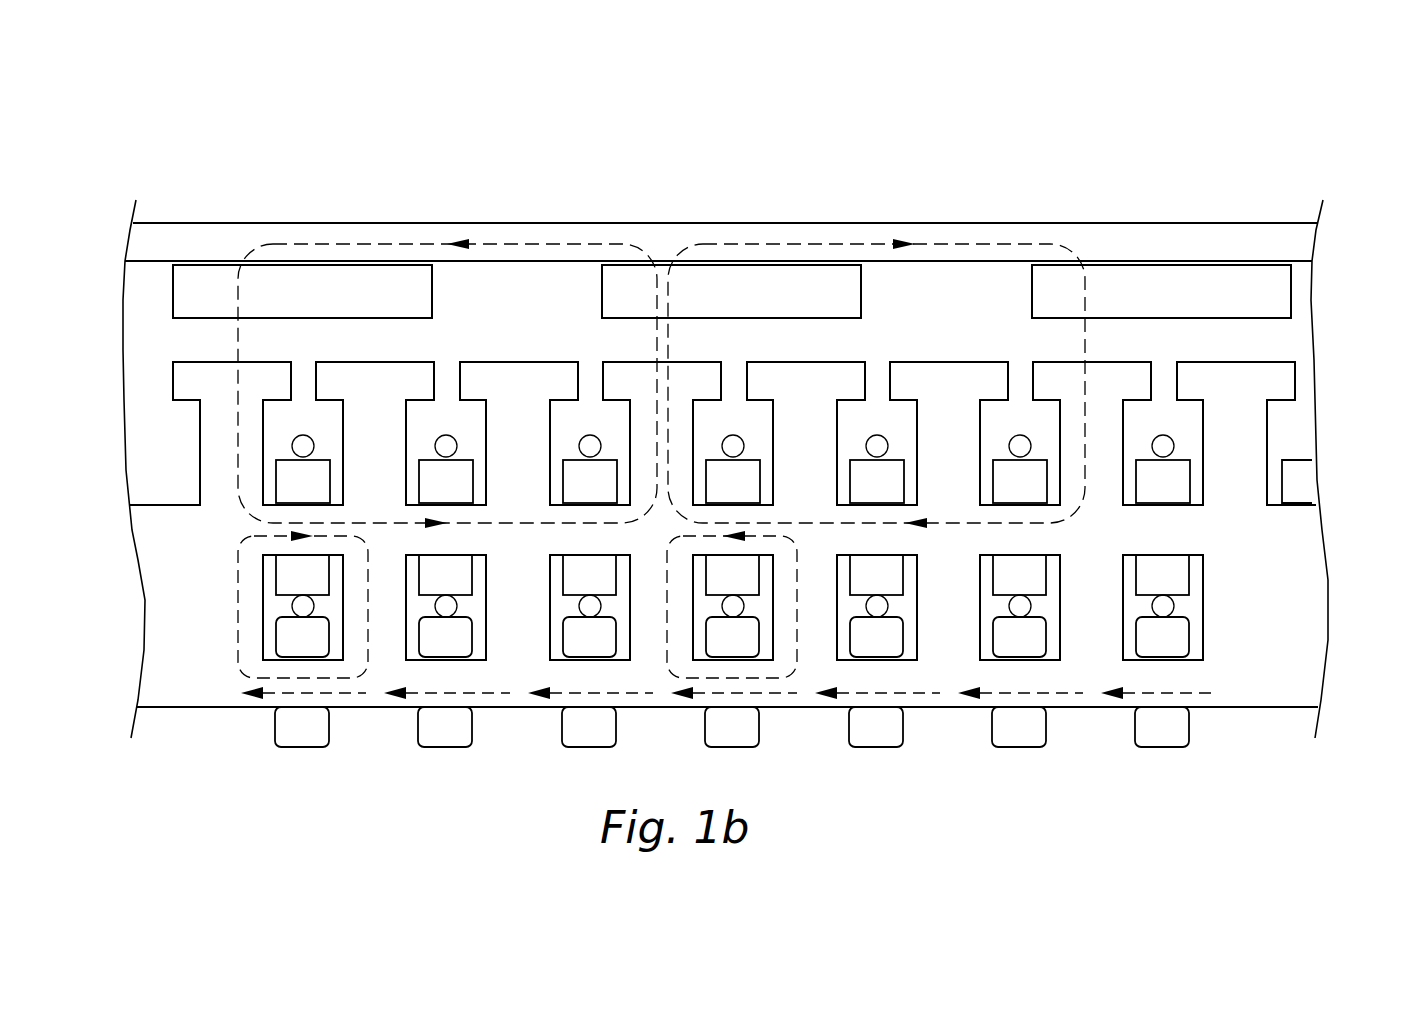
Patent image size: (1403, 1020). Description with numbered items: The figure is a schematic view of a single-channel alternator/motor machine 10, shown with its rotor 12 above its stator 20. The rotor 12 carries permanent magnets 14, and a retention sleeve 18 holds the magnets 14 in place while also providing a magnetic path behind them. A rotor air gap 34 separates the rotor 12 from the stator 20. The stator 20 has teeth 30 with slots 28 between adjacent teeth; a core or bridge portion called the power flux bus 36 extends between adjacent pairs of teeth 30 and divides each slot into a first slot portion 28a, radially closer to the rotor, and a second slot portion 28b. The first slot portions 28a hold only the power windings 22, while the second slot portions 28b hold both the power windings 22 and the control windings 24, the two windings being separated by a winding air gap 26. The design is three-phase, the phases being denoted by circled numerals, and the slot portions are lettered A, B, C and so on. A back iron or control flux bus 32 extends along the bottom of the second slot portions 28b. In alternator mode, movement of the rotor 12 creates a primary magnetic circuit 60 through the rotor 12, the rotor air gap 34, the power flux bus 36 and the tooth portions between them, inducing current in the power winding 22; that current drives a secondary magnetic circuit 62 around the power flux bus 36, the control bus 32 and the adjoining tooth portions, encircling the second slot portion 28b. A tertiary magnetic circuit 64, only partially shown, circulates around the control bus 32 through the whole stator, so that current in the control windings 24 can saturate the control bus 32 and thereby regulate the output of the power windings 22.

The machine 10 is at (222, 200).
The rotor 12 is at (1205, 222).
The permanent magnets 14 is at (203, 290).
The retention sleeve 18 is at (658, 242).
The stator 20 is at (933, 345).
The power winding 22 is at (1189, 483).
The control winding 24 is at (1190, 633).
The winding air gap 26 is at (277, 605).
The slots 28 is at (282, 418).
The first slot portions 28a is at (262, 433).
The second slot portions 28b is at (262, 579).
The teeth 30 is at (522, 378).
The back iron 32 is at (267, 667).
The rotor air gap 34 is at (1245, 338).
The power flux bus 36 is at (273, 512).
The primary magnetic circuit 60 is at (237, 481).
The secondary magnetic circuit 62 is at (238, 627).
The tertiary magnetic circuit 64 is at (279, 692).